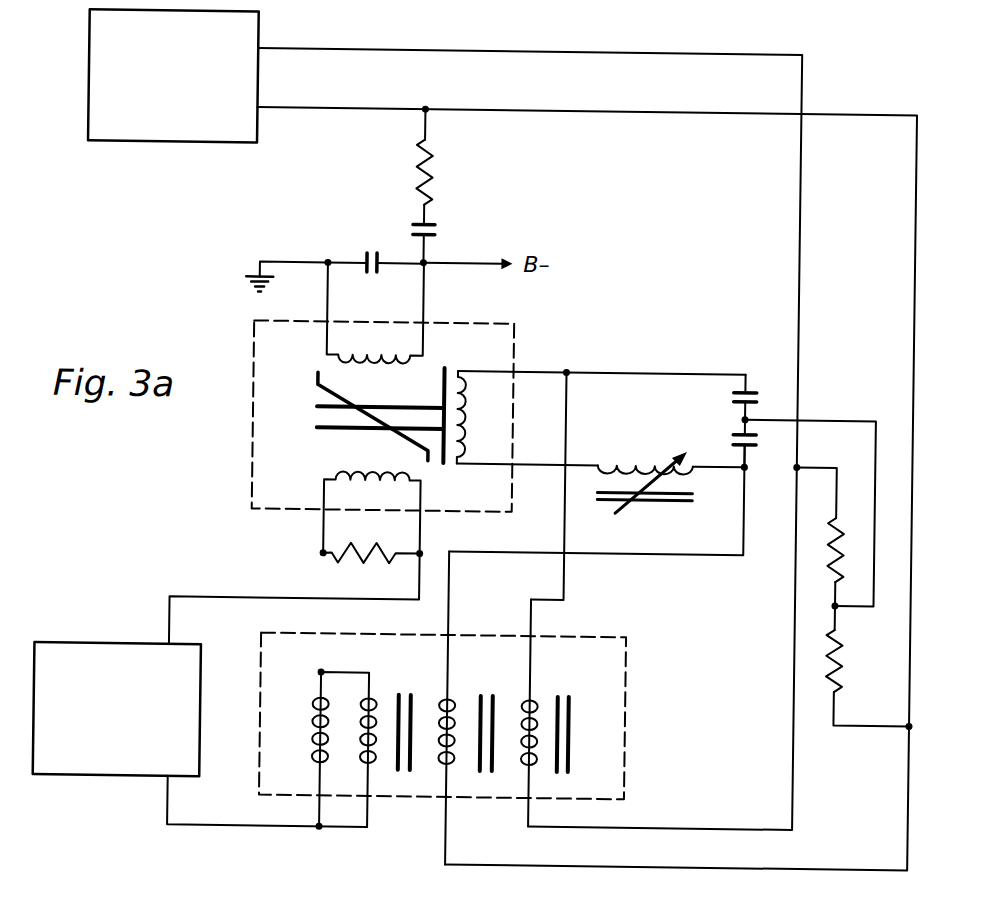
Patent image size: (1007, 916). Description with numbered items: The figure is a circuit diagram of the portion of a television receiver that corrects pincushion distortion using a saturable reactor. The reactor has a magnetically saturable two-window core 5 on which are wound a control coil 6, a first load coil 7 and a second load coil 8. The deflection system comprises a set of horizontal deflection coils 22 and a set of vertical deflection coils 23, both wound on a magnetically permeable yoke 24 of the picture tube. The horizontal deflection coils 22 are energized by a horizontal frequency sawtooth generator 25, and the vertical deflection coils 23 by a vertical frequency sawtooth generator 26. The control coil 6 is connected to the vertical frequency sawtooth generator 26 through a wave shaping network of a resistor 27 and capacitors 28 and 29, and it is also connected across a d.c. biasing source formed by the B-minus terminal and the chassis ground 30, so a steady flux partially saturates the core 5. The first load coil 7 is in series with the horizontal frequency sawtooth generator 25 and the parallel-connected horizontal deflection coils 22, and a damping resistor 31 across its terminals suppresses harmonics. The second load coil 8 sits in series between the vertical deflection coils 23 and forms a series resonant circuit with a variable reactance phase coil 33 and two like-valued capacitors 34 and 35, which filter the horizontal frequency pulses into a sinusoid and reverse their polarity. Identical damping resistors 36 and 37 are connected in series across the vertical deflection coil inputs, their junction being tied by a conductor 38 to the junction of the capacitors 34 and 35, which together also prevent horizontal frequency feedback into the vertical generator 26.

The magnetically saturable two-window core 5 is at (515, 326).
The control coil 6 is at (393, 351).
The first load coil 7 is at (388, 481).
The second load coil 8 is at (470, 421).
The horizontal deflection coils 22 is at (326, 770).
The vertical deflection coils 23 is at (452, 770).
The magnetically permeable yoke 24 is at (396, 790).
The horizontal frequency sawtooth generator 25 is at (115, 647).
The vertical frequency sawtooth generator 26 is at (164, 146).
The resistor 27 is at (429, 162).
The capacitor 28 is at (432, 231).
The capacitor 29 is at (370, 252).
The chassis ground 30 is at (243, 285).
The damping resistor 31 is at (395, 561).
The variable reactance phase coil 33 is at (622, 462).
The capacitor 34 is at (735, 397).
The capacitor 35 is at (737, 433).
The damping resistor 36 is at (833, 560).
The damping resistor 37 is at (843, 660).
The conductor 38 is at (845, 416).